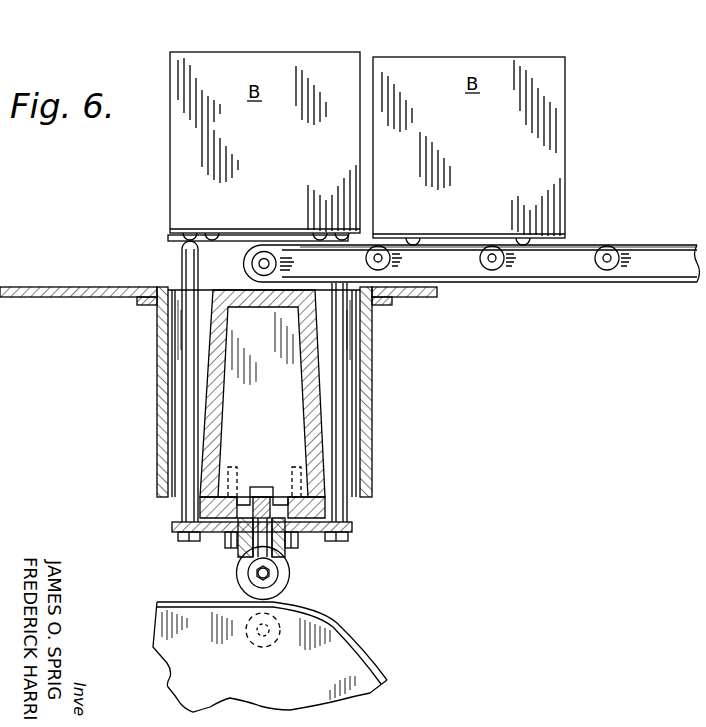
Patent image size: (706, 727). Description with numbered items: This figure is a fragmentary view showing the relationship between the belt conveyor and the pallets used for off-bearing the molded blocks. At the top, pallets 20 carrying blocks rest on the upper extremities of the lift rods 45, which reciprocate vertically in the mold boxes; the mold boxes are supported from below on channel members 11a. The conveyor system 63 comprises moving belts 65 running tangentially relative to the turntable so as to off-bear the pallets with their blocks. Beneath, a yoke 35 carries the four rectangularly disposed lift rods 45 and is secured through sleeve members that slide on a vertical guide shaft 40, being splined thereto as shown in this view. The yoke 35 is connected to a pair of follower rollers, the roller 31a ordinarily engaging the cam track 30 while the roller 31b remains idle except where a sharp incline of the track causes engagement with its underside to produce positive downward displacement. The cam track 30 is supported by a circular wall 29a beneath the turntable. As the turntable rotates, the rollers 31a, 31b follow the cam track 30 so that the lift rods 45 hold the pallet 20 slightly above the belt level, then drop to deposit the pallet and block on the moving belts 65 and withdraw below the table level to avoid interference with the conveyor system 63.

The pallet 20 is at (170, 237).
The lift rod 45 is at (183, 266).
The conveyor system 63 is at (601, 223).
The moving belt 65 is at (684, 246).
The channel member 11a is at (219, 497).
The yoke 35 is at (353, 529).
The vertical guide shaft 40 is at (290, 563).
The roller 31a is at (240, 571).
The cam track 30 is at (203, 598).
The circular wall 29a is at (231, 679).
The roller 31b is at (274, 645).